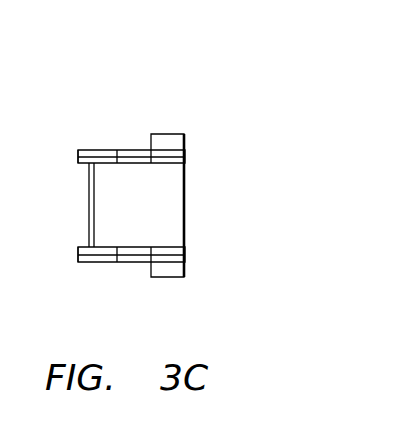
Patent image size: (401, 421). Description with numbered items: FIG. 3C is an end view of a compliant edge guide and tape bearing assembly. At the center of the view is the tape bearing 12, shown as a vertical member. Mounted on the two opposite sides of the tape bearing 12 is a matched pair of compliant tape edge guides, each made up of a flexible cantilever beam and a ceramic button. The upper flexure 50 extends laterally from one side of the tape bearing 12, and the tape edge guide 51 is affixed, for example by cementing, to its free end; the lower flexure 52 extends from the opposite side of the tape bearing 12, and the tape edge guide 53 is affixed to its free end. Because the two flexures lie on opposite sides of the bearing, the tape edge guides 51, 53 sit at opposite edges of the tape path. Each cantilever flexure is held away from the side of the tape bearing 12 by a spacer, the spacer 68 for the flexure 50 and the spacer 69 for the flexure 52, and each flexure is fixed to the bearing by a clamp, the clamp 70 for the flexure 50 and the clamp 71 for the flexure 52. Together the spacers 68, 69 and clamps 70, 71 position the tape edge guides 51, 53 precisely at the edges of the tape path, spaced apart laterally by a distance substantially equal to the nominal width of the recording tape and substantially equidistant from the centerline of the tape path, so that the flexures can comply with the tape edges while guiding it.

The tape bearing 12 is at (88, 206).
The flexure 50 is at (125, 149).
The tape edge guide 51 is at (77, 158).
The flexure 52 is at (123, 263).
The tape edge guide 53 is at (77, 251).
The spacer 68 is at (186, 160).
The spacer 69 is at (186, 253).
The clamp 70 is at (171, 133).
The clamp 71 is at (170, 278).